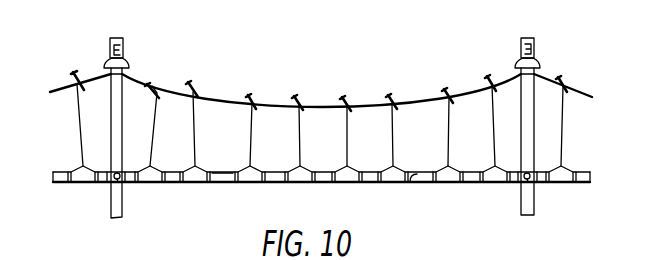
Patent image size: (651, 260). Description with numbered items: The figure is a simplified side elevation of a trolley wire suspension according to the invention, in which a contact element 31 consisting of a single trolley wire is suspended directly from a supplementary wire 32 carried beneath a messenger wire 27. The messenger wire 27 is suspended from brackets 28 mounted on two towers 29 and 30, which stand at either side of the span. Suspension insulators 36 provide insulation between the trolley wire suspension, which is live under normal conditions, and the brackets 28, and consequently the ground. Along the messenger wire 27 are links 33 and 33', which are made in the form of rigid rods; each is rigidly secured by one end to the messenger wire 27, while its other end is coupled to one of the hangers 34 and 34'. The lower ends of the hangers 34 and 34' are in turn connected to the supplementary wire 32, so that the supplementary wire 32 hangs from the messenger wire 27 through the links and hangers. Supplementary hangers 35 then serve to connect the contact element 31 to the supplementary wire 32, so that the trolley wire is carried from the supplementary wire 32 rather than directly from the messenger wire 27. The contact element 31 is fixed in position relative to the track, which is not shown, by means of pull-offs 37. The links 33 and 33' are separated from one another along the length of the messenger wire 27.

The messenger wire 27 is at (230, 98).
The brackets 28 is at (110, 44).
The tower 29 is at (123, 52).
The tower 30 is at (521, 52).
The contact element 31 is at (322, 183).
The supplementary wire 32 is at (414, 182).
The link 33 is at (143, 102).
The link 33' is at (206, 79).
The hanger 34 is at (166, 126).
The hanger 34' is at (208, 129).
The supplementary hangers 35 is at (218, 183).
The suspension insulators 36 is at (538, 63).
The pull-offs 37 is at (125, 184).